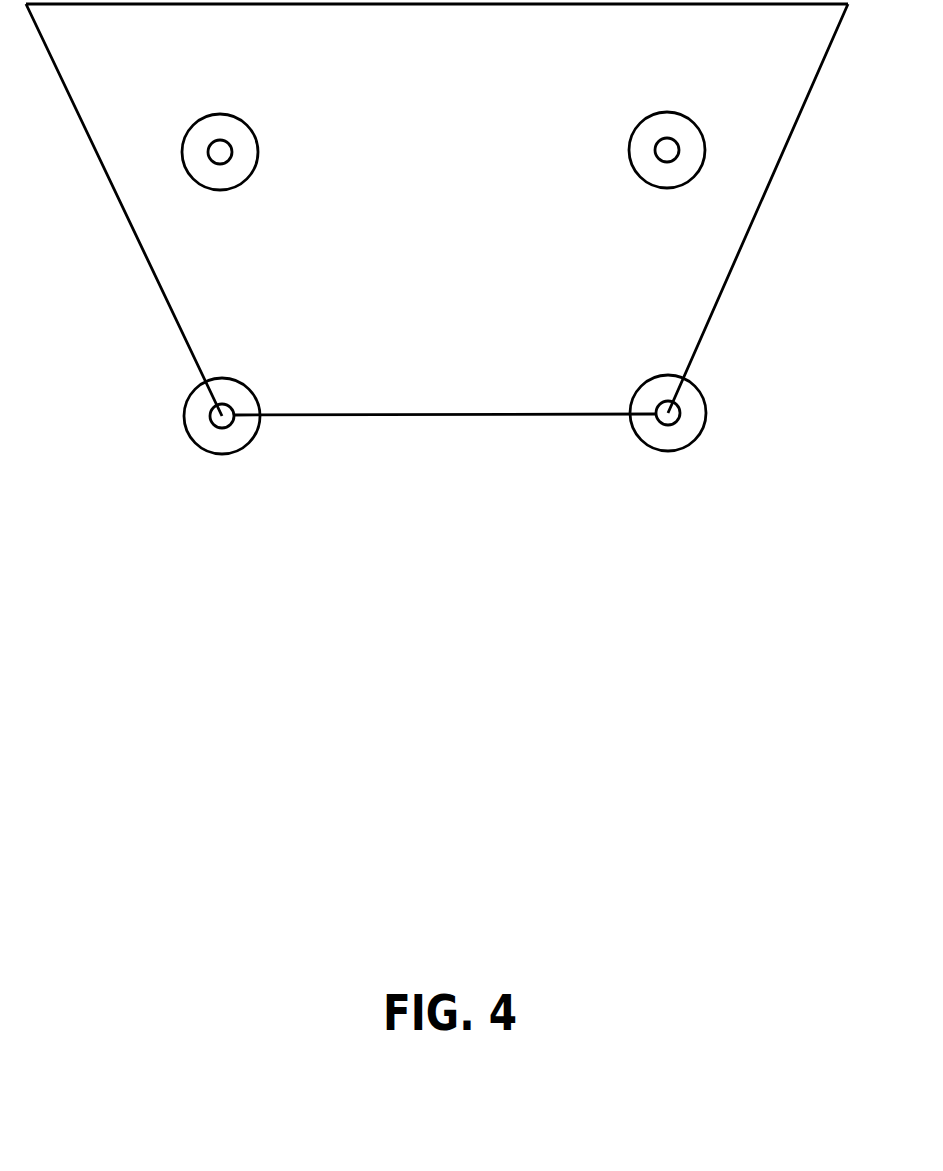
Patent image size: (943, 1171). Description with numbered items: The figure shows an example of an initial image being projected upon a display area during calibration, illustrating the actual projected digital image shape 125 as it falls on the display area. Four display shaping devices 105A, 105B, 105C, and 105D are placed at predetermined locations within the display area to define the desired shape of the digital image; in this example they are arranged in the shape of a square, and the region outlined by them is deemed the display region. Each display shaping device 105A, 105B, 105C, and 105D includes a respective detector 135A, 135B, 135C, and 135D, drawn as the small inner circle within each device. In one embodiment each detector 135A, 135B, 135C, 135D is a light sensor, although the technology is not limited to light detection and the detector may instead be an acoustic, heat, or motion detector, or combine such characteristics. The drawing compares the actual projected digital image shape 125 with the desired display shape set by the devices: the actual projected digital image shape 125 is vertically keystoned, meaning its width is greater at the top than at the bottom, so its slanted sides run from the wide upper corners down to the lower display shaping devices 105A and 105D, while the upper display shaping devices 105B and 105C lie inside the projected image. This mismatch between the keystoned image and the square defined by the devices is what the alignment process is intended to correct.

The actual projected digital image shape 125 is at (465, 221).
The display shaping device 105A is at (226, 453).
The display shaping device 105B is at (220, 114).
The display shaping device 105C is at (667, 112).
The display shaping device 105D is at (668, 451).
The detector 135A is at (230, 425).
The detector 135B is at (228, 143).
The detector 135C is at (658, 141).
The detector 135D is at (660, 423).